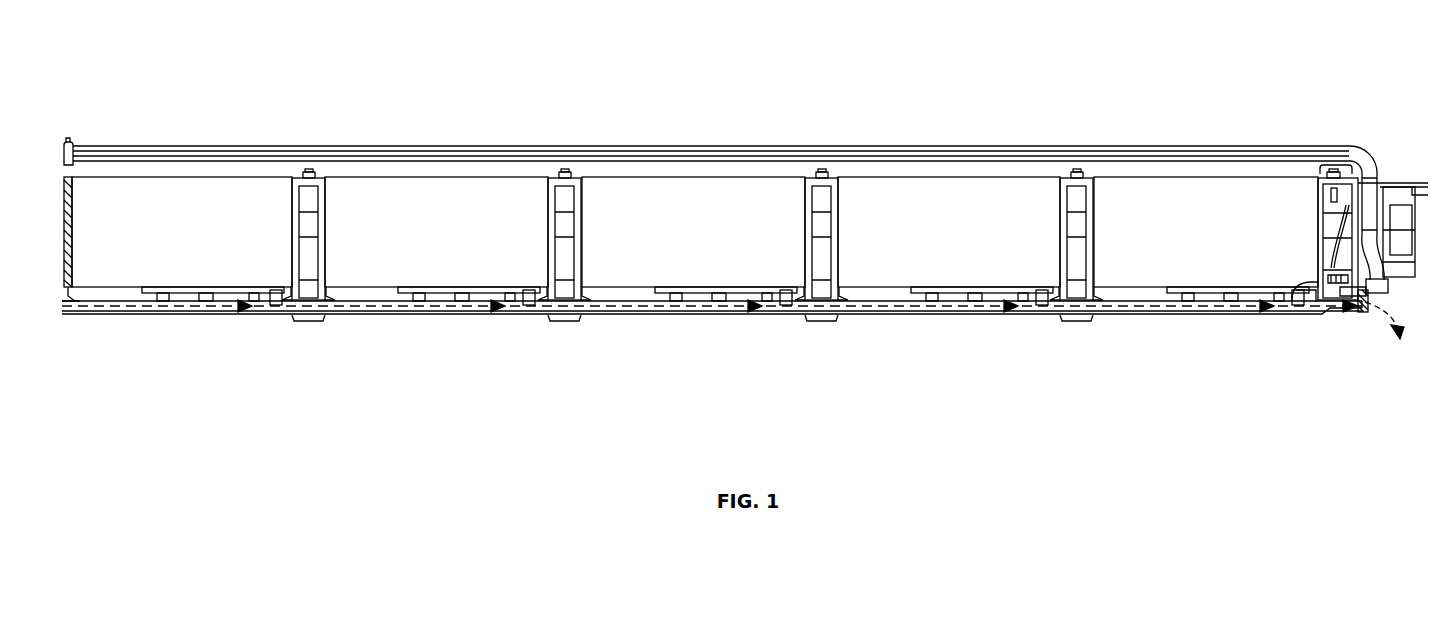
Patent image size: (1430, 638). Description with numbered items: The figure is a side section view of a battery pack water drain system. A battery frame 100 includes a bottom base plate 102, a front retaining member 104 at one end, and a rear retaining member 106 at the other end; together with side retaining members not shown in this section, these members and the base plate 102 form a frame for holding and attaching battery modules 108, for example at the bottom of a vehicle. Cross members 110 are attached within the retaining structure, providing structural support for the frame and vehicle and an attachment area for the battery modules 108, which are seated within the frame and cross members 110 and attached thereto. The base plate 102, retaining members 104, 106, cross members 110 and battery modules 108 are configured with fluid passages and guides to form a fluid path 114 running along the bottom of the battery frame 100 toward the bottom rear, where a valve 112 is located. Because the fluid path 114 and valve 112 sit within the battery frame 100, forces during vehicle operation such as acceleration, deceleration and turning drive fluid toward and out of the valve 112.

The battery frame 100 is at (818, 135).
The bottom base plate 102 is at (208, 313).
The front retaining member 104 is at (62, 283).
The rear retaining member 106 is at (1340, 167).
The battery module 108 is at (695, 241).
The cross member 110 is at (310, 322).
The valve 112 is at (1357, 300).
The fluid path 114 is at (185, 312).